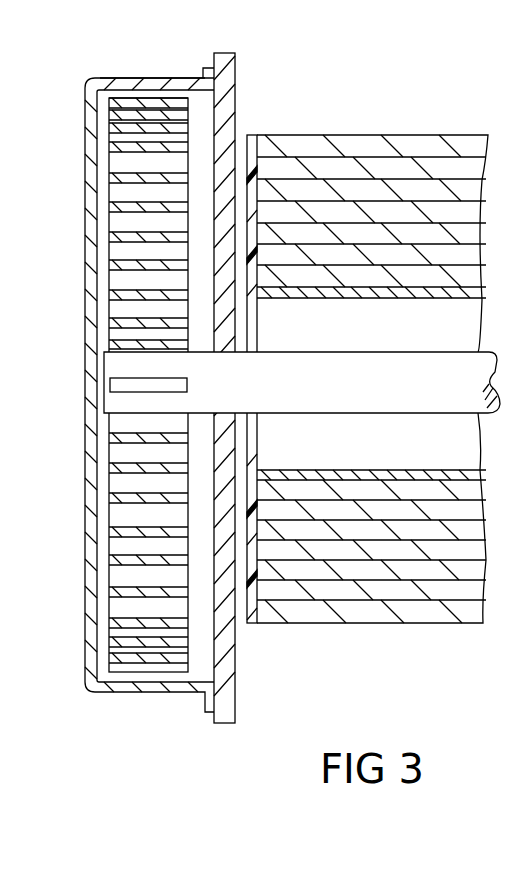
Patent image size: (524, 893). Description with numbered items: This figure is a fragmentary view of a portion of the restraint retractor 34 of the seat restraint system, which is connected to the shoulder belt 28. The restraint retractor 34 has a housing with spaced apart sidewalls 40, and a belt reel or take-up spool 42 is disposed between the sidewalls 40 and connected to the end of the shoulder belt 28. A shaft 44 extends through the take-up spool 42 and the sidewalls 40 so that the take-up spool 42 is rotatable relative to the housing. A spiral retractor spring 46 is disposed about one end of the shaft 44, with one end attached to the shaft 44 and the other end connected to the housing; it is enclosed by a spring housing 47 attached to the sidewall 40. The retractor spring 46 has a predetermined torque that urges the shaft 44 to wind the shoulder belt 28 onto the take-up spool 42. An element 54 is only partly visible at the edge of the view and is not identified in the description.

The shoulder belt 28 is at (408, 150).
The restraint retractor 34 is at (76, 101).
The sidewalls 40 is at (228, 95).
The take-up spool 42 is at (250, 140).
The shaft 44 is at (445, 370).
The retractor spring 46 is at (132, 567).
The spring housing 47 is at (150, 79).
The element 54 is at (6, 555).